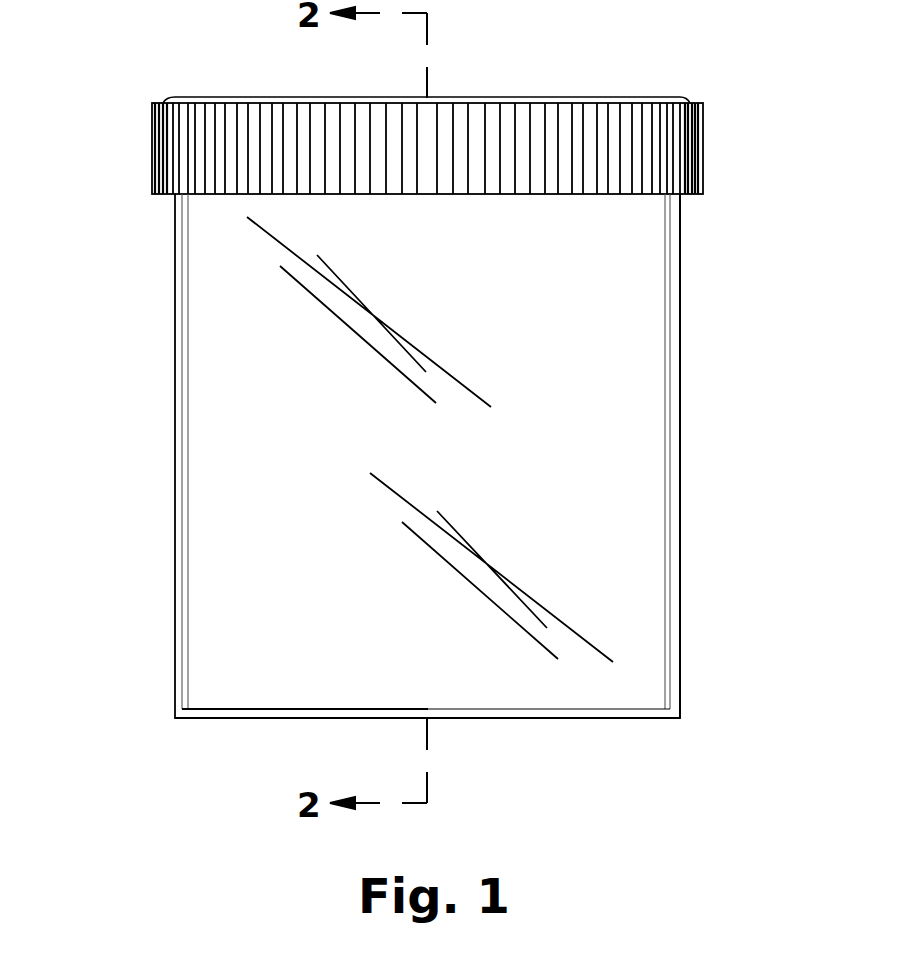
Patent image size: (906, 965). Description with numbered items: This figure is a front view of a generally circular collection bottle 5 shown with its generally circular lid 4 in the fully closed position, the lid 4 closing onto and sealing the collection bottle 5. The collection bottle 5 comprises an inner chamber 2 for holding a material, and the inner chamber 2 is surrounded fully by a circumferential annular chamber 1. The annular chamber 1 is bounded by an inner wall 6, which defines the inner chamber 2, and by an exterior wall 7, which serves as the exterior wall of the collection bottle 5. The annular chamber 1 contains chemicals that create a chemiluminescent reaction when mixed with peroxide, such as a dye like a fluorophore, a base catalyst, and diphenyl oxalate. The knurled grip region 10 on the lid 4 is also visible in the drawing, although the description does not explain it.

The annular chamber 1 is at (467, 487).
The inner chamber 2 is at (250, 480).
The lid 4 is at (413, 145).
The collection bottle 5 is at (362, 718).
The inner wall 6 is at (666, 494).
The exterior wall 7 is at (680, 595).
The knurled grip ribs 10 is at (680, 139).